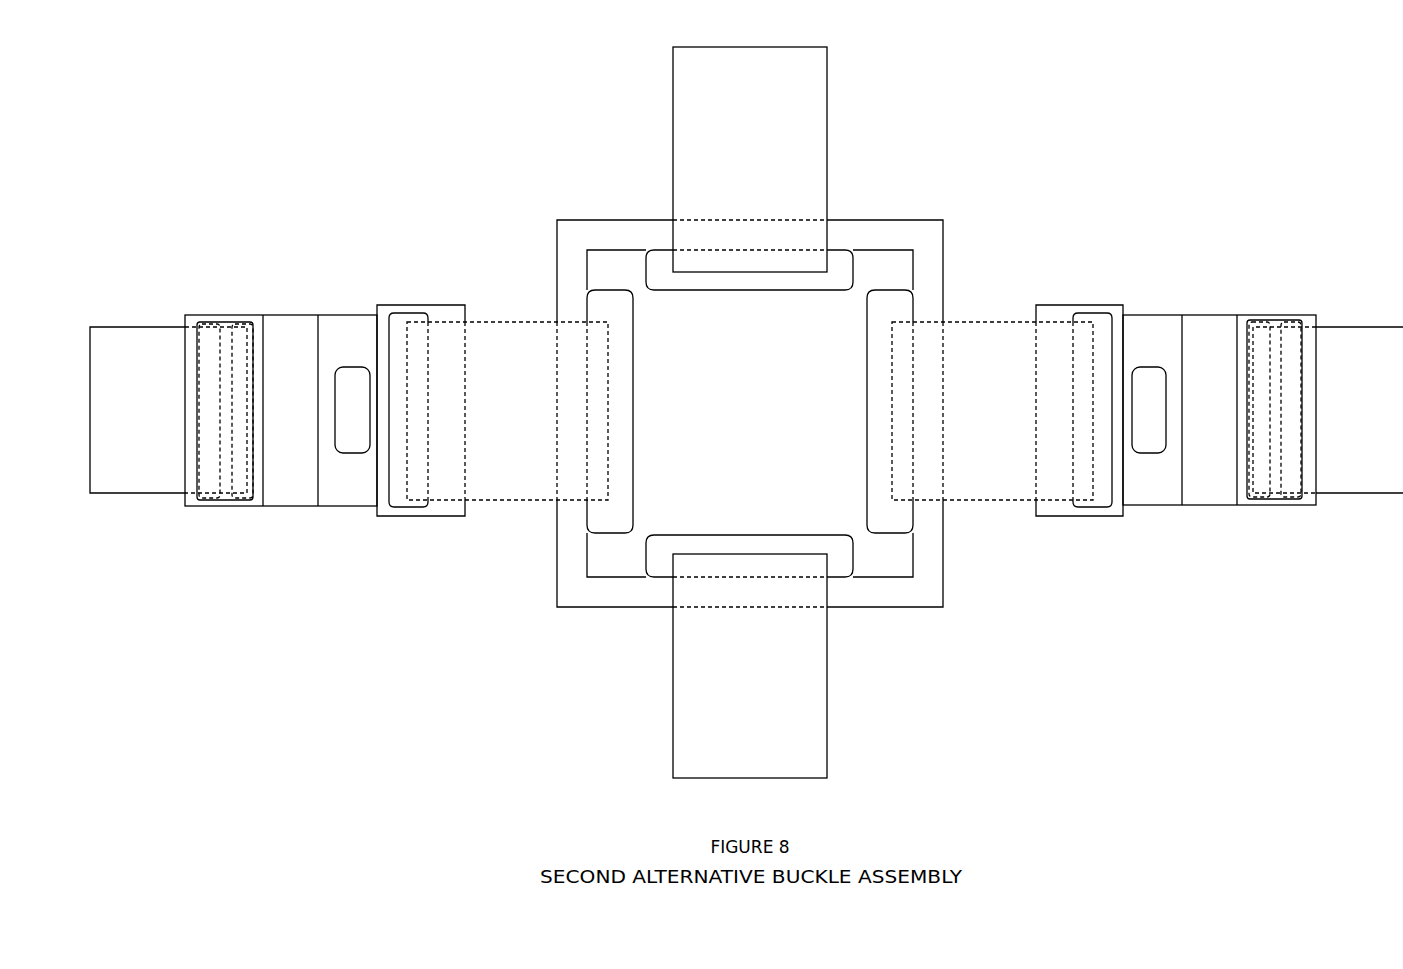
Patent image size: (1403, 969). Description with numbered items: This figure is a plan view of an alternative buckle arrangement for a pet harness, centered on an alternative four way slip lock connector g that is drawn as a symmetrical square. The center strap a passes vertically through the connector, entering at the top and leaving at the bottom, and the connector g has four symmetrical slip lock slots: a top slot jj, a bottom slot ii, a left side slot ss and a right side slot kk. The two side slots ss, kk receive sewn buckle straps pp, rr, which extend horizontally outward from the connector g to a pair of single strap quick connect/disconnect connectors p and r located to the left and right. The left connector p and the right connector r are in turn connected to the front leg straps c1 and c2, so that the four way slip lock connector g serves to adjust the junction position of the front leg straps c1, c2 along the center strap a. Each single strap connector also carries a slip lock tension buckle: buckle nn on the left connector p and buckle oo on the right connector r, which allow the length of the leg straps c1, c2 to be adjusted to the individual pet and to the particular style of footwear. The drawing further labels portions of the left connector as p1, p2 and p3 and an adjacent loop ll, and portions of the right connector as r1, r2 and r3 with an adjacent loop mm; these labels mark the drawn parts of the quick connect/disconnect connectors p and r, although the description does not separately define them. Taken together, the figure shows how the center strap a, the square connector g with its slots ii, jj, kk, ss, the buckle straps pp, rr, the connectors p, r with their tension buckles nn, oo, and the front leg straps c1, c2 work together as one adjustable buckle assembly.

The center strap a is at (750, 412).
The front leg strap c1 is at (168, 410).
The front leg strap c2 is at (1328, 410).
The single strap quick connect/disconnect connector p is at (290, 272).
The first segment of first buckle portion p1 is at (291, 485).
The second segment of first buckle portion p2 is at (330, 485).
The slot of first buckle portion p3 is at (352, 440).
The slip lock tension buckle nn is at (229, 345).
The first loop ll is at (400, 348).
The sewn buckle strap pp is at (509, 347).
The slip lock slot ss is at (605, 302).
The slip lock slot jj is at (657, 252).
The slip lock slot ii is at (657, 566).
The four way slip lock connector g is at (893, 265).
The slip lock slot kk is at (905, 307).
The sewn buckle strap rr is at (963, 348).
The second loop mm is at (1103, 337).
The slip lock tension buckle oo is at (1275, 333).
The single strap quick connect/disconnect connector r is at (1210, 272).
The first segment of second buckle portion r1 is at (1215, 482).
The second segment of second buckle portion r2 is at (1164, 482).
The slot of second buckle portion r3 is at (1150, 433).